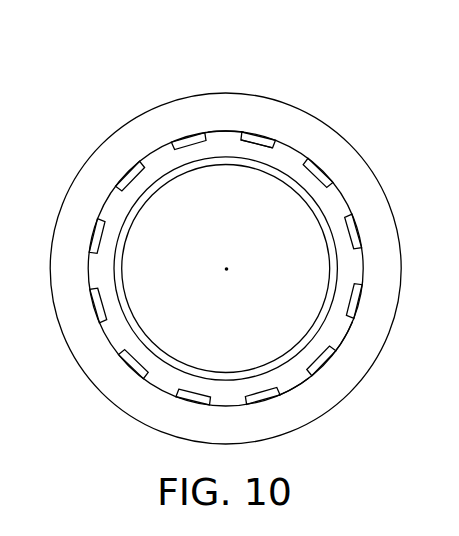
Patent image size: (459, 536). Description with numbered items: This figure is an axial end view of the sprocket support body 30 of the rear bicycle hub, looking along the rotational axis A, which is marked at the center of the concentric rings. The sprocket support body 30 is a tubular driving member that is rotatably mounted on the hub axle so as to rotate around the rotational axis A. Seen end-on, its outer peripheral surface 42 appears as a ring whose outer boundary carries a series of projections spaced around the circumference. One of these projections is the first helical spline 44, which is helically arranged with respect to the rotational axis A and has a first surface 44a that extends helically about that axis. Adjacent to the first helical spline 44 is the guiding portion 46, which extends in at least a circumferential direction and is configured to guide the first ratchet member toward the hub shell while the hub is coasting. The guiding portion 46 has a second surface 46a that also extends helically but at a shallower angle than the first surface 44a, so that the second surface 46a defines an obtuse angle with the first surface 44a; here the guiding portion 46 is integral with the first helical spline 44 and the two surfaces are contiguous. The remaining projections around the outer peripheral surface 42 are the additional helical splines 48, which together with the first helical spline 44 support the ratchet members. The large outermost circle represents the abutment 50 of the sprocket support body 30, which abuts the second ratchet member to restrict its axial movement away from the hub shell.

The sprocket support body 30 is at (346, 110).
The outer peripheral surface 42 is at (358, 228).
The first helical spline 44 is at (155, 149).
The first surface 44a is at (247, 135).
The guiding portion 46 is at (279, 144).
The second surface 46a is at (272, 143).
The additional helical splines 48 is at (342, 333).
The abutment 50 is at (100, 394).
The rotational axis A is at (229, 268).